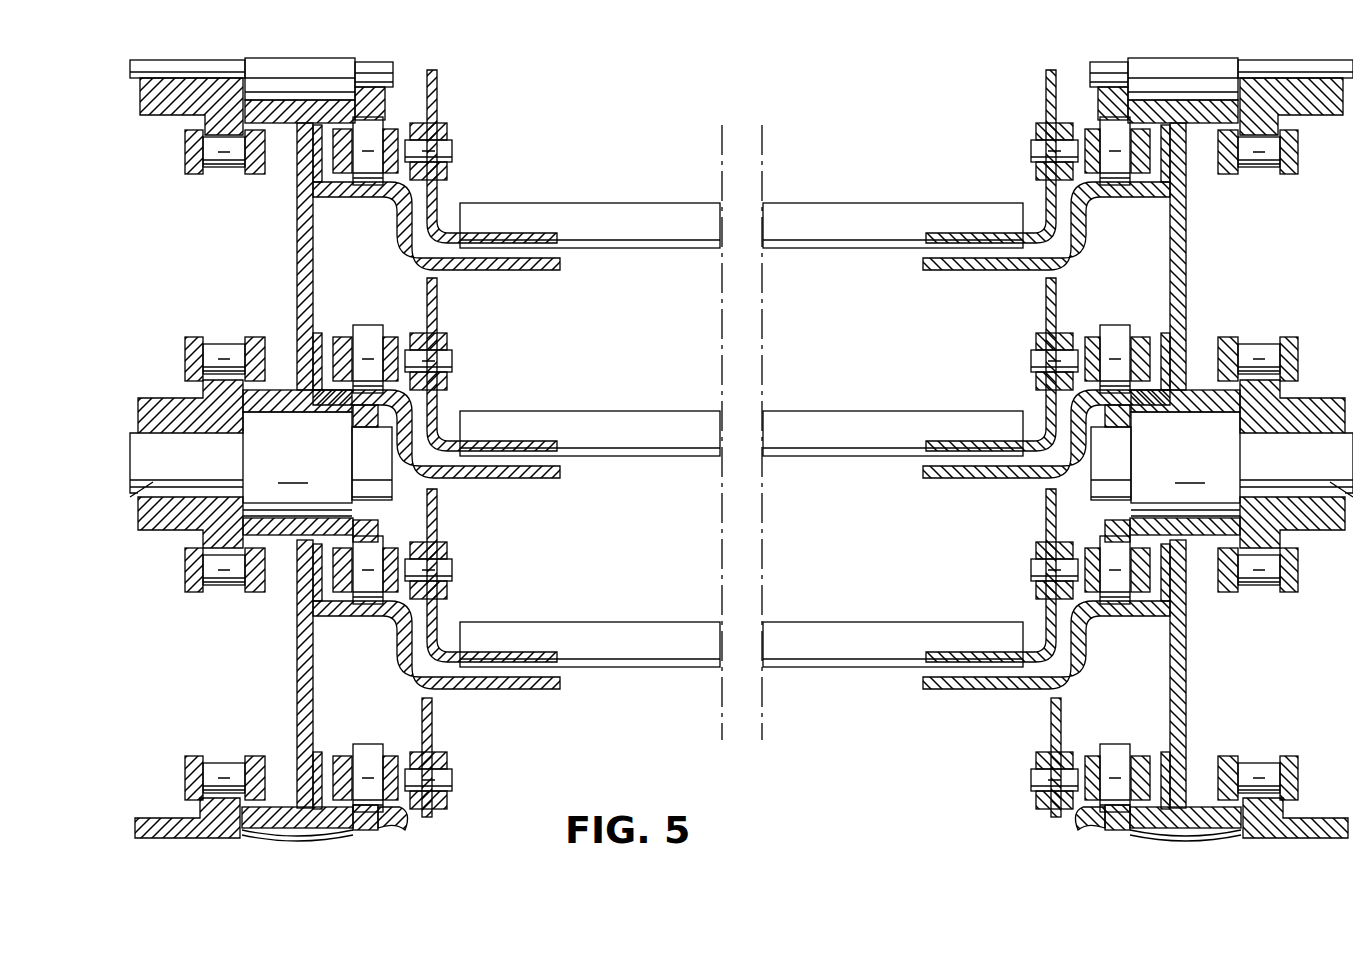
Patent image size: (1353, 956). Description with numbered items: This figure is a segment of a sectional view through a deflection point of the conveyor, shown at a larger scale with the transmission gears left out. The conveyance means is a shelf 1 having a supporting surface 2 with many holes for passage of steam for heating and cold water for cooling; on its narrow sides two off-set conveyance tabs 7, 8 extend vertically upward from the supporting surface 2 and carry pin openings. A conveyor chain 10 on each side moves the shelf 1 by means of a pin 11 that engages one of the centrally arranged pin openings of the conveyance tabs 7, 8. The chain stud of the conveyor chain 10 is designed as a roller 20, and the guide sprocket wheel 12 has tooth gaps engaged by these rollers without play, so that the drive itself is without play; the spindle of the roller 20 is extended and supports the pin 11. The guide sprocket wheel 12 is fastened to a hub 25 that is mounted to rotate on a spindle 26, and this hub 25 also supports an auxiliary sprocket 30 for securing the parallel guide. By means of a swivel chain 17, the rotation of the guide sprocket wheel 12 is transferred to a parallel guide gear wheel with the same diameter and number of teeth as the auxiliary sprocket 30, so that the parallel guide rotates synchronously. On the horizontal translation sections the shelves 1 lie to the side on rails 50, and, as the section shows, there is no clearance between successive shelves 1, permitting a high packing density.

The shelf 1 is at (670, 404).
The supporting surface 2 is at (672, 458).
The conveyance tab 7 is at (437, 328).
The conveyance tab 8 is at (1047, 312).
The conveyor chain 10 is at (395, 327).
The pin 11 is at (447, 340).
The guide sprocket wheel 12 is at (428, 408).
The swivel chain 17 is at (233, 352).
The roller 20 is at (367, 338).
The hub 25 is at (278, 388).
The spindle 26 is at (130, 497).
The auxiliary sprocket 30 is at (205, 408).
The rail 50 is at (487, 473).